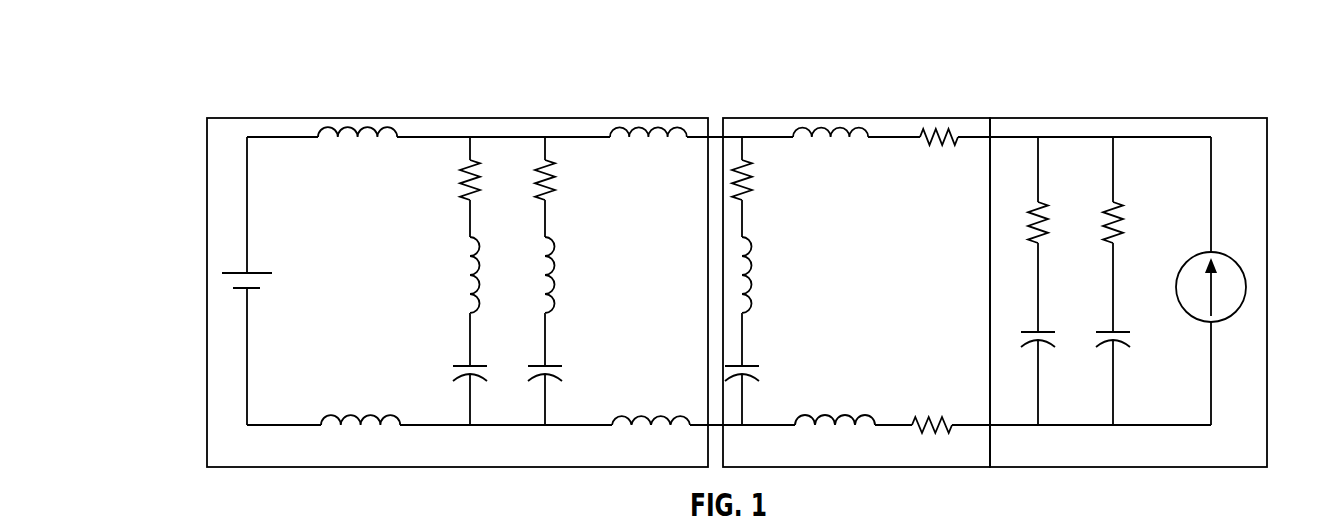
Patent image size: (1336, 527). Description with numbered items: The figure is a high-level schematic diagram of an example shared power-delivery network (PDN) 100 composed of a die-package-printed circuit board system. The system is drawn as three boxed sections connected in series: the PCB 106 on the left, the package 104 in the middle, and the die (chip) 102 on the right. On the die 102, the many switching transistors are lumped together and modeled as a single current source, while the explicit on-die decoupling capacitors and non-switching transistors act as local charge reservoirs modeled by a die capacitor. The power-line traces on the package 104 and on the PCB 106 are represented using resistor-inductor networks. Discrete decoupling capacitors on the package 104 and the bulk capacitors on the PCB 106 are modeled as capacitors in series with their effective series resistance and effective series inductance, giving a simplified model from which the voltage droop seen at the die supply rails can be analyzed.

The power-delivery network 100 is at (192, 75).
The die 102 is at (1192, 117).
The package 104 is at (920, 467).
The PCB 106 is at (318, 118).